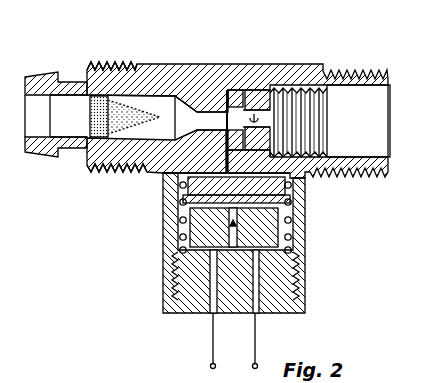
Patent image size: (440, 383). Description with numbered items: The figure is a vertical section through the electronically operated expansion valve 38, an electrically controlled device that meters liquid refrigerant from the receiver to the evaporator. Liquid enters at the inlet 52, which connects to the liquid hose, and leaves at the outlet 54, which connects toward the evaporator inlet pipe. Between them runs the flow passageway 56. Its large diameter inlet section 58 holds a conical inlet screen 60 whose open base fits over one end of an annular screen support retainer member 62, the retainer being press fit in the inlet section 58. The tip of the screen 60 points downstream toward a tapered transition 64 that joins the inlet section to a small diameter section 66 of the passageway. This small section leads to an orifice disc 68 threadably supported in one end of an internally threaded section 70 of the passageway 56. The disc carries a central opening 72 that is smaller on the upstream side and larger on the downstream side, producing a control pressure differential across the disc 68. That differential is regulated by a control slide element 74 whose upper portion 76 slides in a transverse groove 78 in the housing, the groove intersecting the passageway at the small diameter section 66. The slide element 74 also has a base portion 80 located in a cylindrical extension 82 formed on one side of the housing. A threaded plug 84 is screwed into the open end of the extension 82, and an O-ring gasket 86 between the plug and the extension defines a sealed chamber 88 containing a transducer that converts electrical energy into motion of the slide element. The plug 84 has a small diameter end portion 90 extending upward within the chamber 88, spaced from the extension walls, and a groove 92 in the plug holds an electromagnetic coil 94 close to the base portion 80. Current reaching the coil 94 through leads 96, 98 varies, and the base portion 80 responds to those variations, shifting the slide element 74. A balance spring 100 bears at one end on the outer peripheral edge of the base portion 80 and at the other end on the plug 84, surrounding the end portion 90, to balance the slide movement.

The expansion valve 38 is at (129, 61).
The inlet 52 is at (44, 77).
The outlet 54 is at (361, 72).
The flow passageway 56 is at (168, 103).
The large diameter inlet section 58 is at (147, 95).
The conical inlet screen 60 is at (140, 129).
The annular screen support retainer member 62 is at (95, 136).
The tapered transition 64 is at (185, 105).
The small diameter section 66 is at (214, 111).
The orifice disc 68 is at (256, 112).
The internally threaded section 70 is at (301, 97).
The opening 72 is at (268, 110).
The control slide element 74 is at (177, 158).
The upper portion 76 is at (229, 142).
The transverse groove 78 is at (281, 169).
The base portion 80 is at (297, 192).
The cylindrical extension 82 is at (167, 268).
The threaded plug 84 is at (171, 302).
The O-ring gasket 86 is at (298, 293).
The sealed chamber 88 is at (290, 223).
The small diameter end portion 90 is at (184, 241).
The groove 92 is at (181, 221).
The electromagnetic coil 94 is at (292, 231).
The lead 96 is at (210, 327).
The lead 98 is at (257, 335).
The balance spring 100 is at (180, 207).